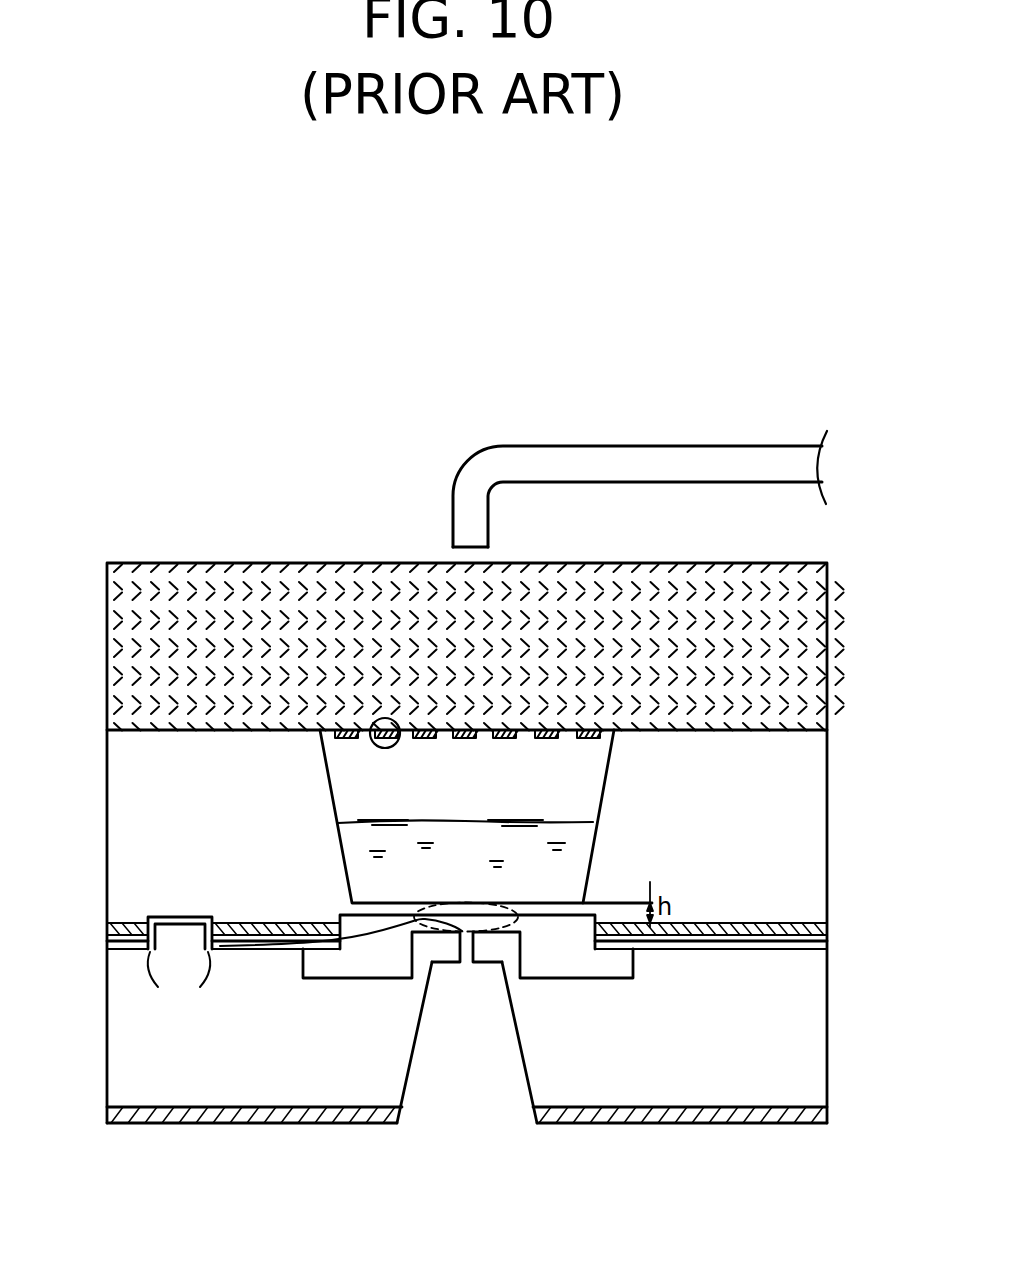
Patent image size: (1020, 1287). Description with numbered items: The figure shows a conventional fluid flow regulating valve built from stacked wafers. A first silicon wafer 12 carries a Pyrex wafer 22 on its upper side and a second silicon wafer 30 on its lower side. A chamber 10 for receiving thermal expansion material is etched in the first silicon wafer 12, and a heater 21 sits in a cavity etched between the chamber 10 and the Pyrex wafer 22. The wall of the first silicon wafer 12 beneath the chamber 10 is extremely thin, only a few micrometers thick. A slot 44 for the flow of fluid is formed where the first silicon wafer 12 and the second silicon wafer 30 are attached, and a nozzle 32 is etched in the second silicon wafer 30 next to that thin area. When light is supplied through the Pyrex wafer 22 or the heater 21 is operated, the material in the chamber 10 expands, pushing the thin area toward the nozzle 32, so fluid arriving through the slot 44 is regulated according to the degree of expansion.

The chamber 10 is at (478, 862).
The first silicon wafer 12 is at (734, 860).
The heater 21 is at (358, 728).
The Pyrex wafer 22 is at (661, 573).
The second silicon wafer 30 is at (735, 1031).
The nozzle 32 is at (465, 935).
The slot 44 is at (195, 917).